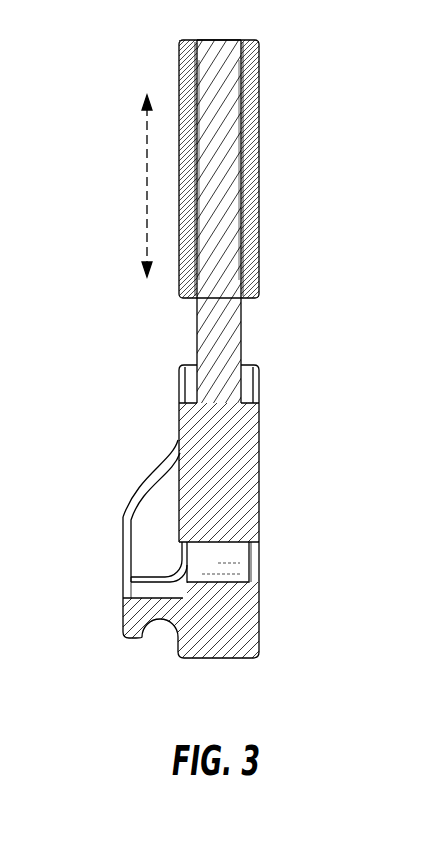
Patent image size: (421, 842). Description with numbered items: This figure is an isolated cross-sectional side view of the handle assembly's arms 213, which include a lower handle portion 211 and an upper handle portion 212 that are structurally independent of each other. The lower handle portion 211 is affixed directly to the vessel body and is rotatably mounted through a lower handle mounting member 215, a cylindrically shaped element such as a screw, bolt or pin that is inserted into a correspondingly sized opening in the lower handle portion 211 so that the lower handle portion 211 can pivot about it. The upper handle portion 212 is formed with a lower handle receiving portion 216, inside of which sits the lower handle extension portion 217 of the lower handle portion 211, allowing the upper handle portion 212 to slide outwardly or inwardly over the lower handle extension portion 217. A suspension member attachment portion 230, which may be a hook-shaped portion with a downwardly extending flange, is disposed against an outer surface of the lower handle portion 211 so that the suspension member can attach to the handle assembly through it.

The lower handle portion 211 is at (242, 342).
The upper handle portion 212 is at (258, 62).
The arms 213 is at (143, 63).
The lower handle mounting member 215 is at (223, 548).
The lower handle receiving portion 216 is at (240, 52).
The lower handle extension portion 217 is at (225, 165).
The suspension member attachment portion 230 is at (125, 515).